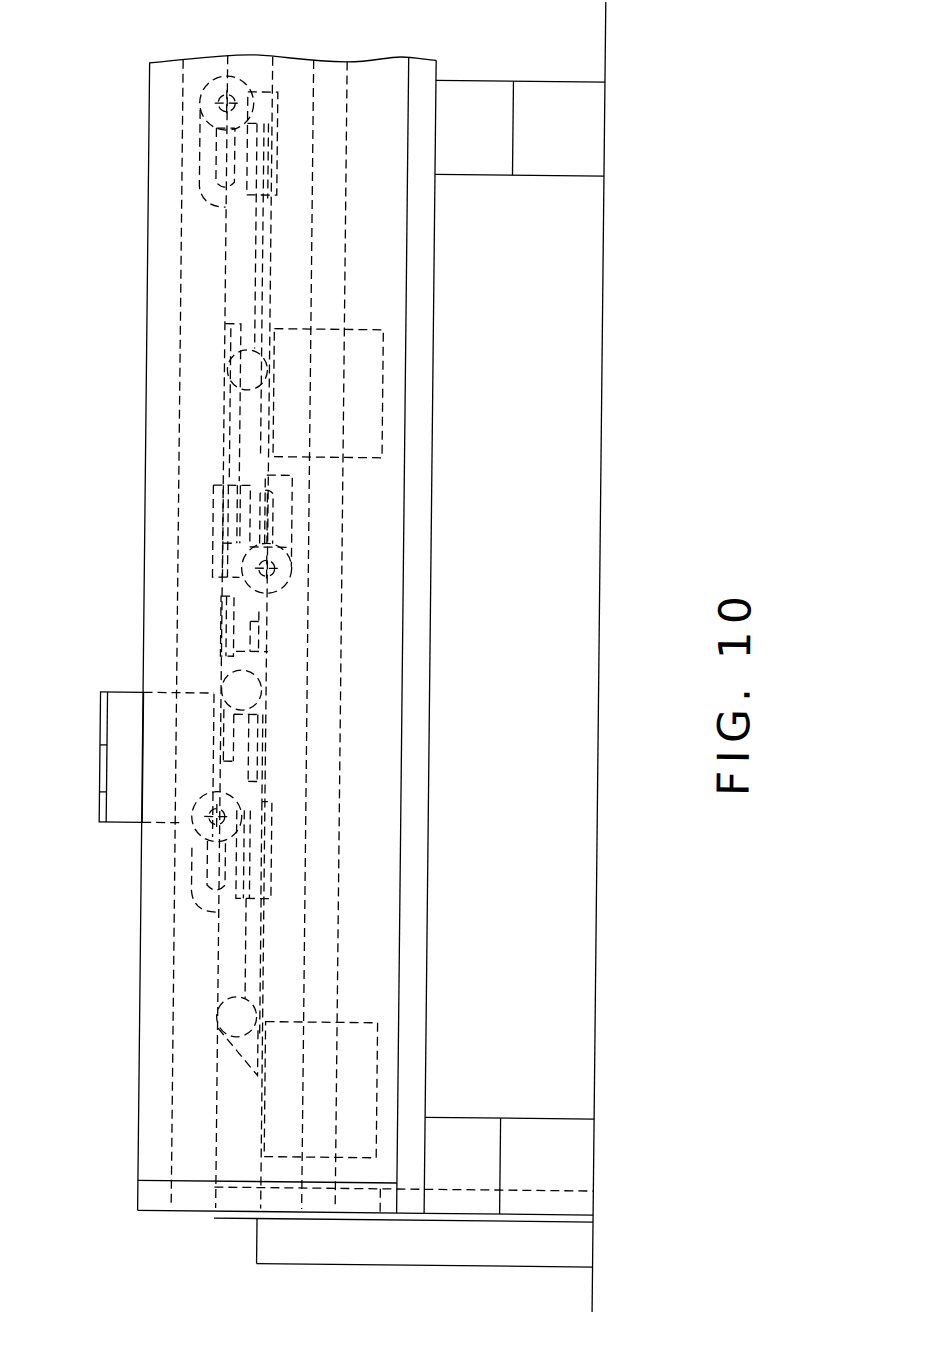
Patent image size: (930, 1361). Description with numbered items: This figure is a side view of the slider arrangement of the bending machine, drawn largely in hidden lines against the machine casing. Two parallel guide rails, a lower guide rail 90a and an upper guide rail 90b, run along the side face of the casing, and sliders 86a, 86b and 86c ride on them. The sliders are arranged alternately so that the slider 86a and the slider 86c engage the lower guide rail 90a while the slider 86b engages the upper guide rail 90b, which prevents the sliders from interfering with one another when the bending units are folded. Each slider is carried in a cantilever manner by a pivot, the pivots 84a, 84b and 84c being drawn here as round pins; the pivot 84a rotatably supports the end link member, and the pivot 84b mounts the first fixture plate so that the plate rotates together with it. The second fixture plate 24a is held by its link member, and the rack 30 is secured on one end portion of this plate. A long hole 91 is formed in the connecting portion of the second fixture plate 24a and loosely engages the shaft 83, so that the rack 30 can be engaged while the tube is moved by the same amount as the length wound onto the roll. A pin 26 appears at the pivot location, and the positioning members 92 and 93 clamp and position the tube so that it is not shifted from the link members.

The second fixture plate 24a is at (221, 952).
The pivot pin 26 is at (282, 569).
The rack 30 is at (210, 527).
The shaft 83 is at (255, 578).
The pivot 84a is at (221, 1017).
The pivot 84b is at (228, 687).
The pivot 84c is at (224, 369).
The slider 86a is at (379, 1062).
The slider 86b is at (111, 748).
The slider 86c is at (370, 392).
The lower guide rail 90a is at (333, 919).
The upper guide rail 90b is at (185, 1132).
The long hole 91 is at (212, 871).
The positioning member 92 is at (268, 744).
The positioning member 93 is at (238, 654).